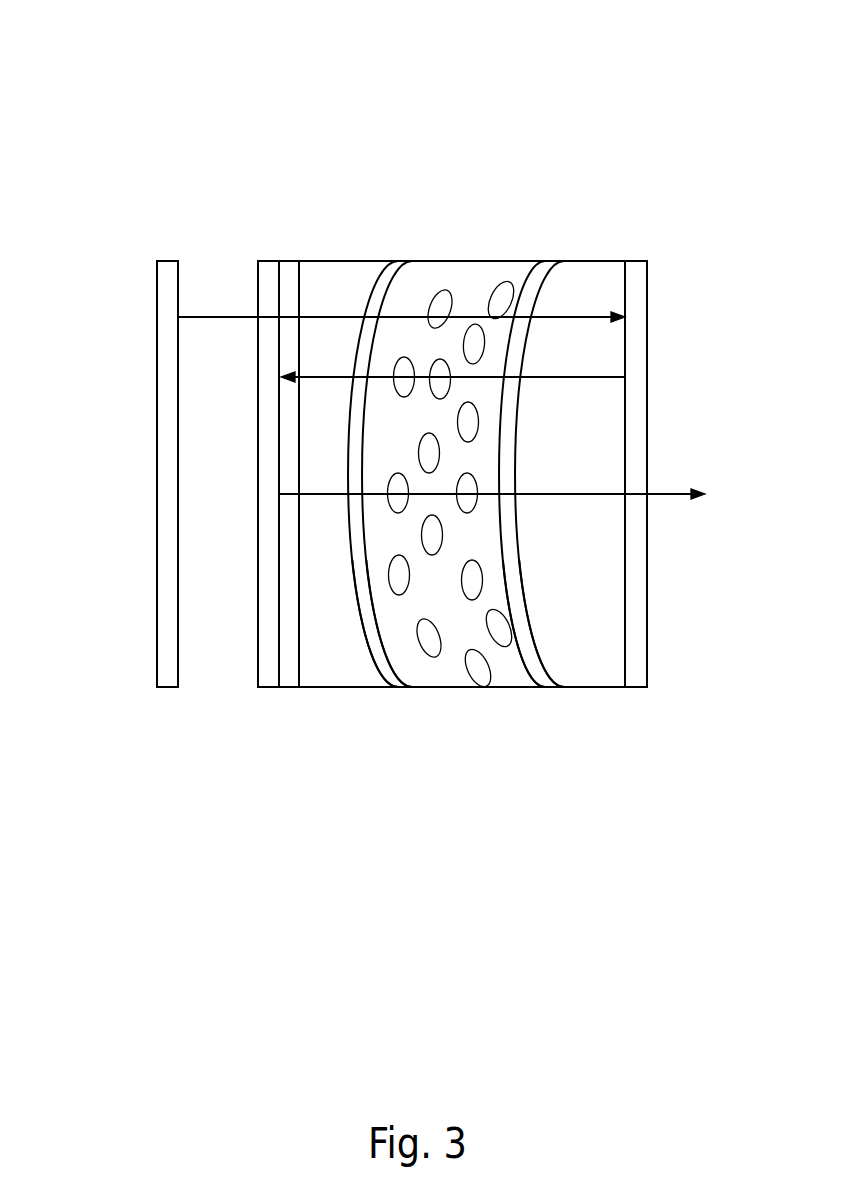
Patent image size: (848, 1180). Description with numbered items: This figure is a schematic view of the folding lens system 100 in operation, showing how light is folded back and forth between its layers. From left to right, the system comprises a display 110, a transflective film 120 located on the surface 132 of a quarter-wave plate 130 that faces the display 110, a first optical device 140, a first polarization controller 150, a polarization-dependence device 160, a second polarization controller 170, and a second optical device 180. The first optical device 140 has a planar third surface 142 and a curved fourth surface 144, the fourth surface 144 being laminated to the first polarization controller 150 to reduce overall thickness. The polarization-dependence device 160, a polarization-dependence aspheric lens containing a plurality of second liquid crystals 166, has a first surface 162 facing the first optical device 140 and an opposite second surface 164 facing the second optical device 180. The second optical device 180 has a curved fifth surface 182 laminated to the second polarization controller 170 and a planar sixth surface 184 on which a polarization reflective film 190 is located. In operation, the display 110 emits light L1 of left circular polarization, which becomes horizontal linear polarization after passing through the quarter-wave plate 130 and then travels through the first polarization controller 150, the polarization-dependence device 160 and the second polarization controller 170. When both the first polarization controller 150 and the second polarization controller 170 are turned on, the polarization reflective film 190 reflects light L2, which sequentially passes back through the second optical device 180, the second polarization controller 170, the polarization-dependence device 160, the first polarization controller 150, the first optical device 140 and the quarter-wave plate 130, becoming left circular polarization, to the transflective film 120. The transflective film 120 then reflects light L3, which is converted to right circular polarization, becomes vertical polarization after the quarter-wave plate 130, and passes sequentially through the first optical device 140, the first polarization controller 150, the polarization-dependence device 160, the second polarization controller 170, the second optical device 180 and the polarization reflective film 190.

The folding lens system 100 is at (80, 46).
The display 110 is at (170, 267).
The transflective film 120 is at (268, 267).
The quarter-wave plate 130 is at (290, 267).
The surface of quarter-wave plate 132 is at (278, 588).
The first optical device 140 is at (342, 267).
The third surface 142 is at (298, 642).
The fourth surface 144 is at (382, 664).
The first polarization controller 150 is at (402, 267).
The polarization-dependence device 160 is at (480, 270).
The first surface 162 is at (364, 642).
The second surface 164 is at (527, 643).
The second liquid crystals 166 is at (475, 677).
The second polarization controller 170 is at (543, 267).
The second optical device 180 is at (610, 267).
The fifth surface 182 is at (544, 690).
The sixth surface 184 is at (630, 667).
The polarization reflective film 190 is at (637, 272).
The light L1 is at (577, 317).
The light L2 is at (593, 375).
The light L3 is at (600, 490).